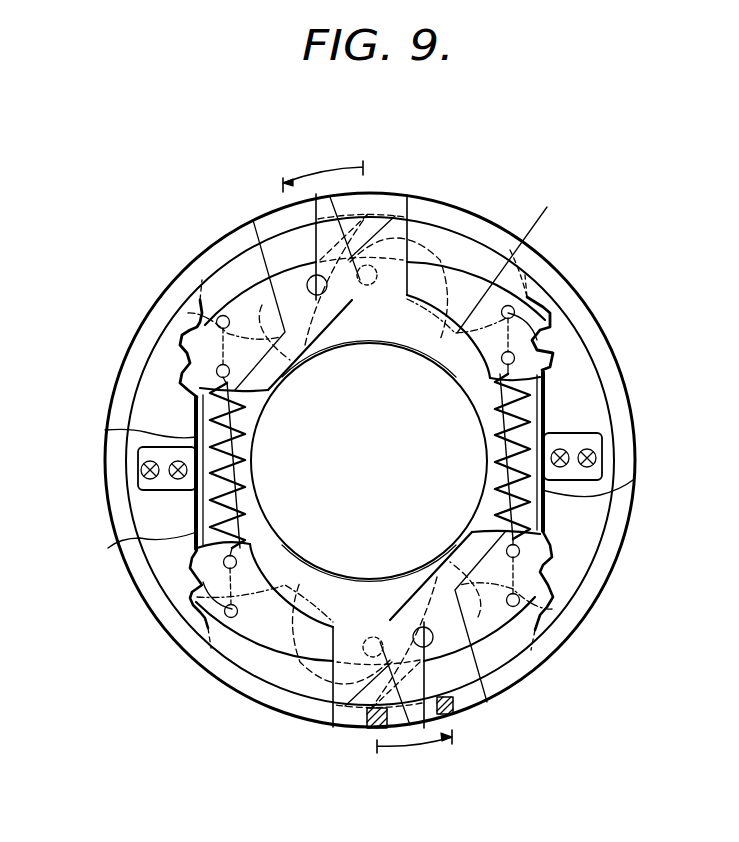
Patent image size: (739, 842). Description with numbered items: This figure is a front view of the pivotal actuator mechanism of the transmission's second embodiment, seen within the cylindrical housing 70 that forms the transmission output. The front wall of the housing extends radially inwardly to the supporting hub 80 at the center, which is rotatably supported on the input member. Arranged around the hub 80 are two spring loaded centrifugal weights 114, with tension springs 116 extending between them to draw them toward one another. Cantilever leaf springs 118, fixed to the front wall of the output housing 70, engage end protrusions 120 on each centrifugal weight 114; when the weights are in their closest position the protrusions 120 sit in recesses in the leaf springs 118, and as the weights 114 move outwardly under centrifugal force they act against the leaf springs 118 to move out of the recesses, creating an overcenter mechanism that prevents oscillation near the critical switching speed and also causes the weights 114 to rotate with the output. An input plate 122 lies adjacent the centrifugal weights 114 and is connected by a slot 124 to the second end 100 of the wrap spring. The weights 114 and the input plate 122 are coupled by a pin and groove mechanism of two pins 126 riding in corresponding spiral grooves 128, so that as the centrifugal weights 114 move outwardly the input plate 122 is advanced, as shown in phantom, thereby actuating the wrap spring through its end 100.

The cylindrical housing 70 is at (224, 243).
The supporting hub 80 is at (486, 454).
The second end of wrap spring 100 is at (373, 733).
The centrifugal weights 114 is at (443, 277).
The tension springs 116 is at (205, 440).
The cantilever leaf springs 118 is at (108, 548).
The end protrusions 120 is at (198, 320).
The input plate 122 is at (513, 261).
The slot 124 is at (380, 738).
The pins 126 is at (397, 340).
The spiral grooves 128 is at (343, 340).